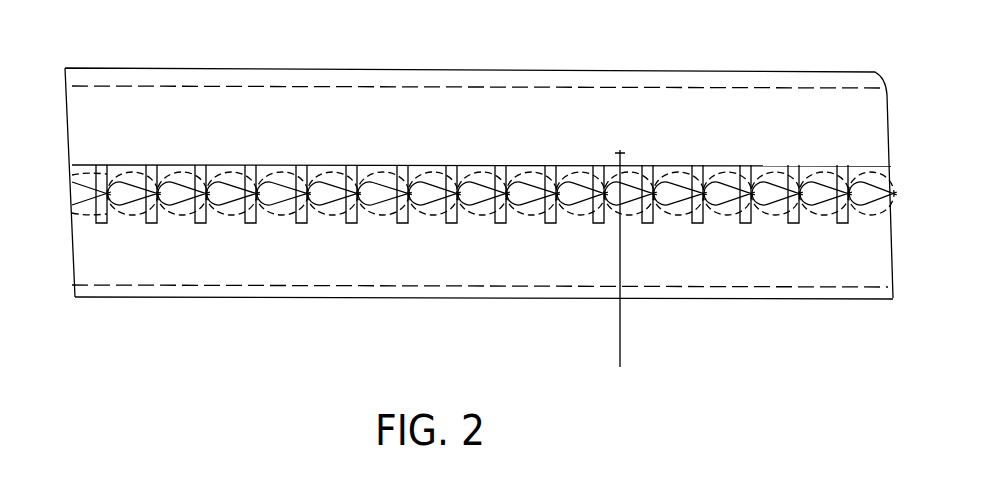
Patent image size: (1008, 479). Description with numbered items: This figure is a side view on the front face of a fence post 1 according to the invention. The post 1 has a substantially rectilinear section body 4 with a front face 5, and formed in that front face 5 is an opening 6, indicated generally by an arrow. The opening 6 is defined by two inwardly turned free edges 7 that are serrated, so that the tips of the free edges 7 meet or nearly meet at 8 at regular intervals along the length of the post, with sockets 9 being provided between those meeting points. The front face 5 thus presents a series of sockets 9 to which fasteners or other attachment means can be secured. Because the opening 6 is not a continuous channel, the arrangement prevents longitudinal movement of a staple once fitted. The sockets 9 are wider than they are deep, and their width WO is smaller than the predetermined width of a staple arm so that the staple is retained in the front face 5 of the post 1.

The post 1 is at (343, 70).
The body 4 is at (225, 285).
The front face 5 is at (793, 273).
The opening 6 is at (762, 187).
The free edges 7 is at (733, 182).
The meeting point of free edge tips 8 is at (553, 197).
The sockets 9 is at (323, 198).
The width of the sockets WO is at (620, 274).